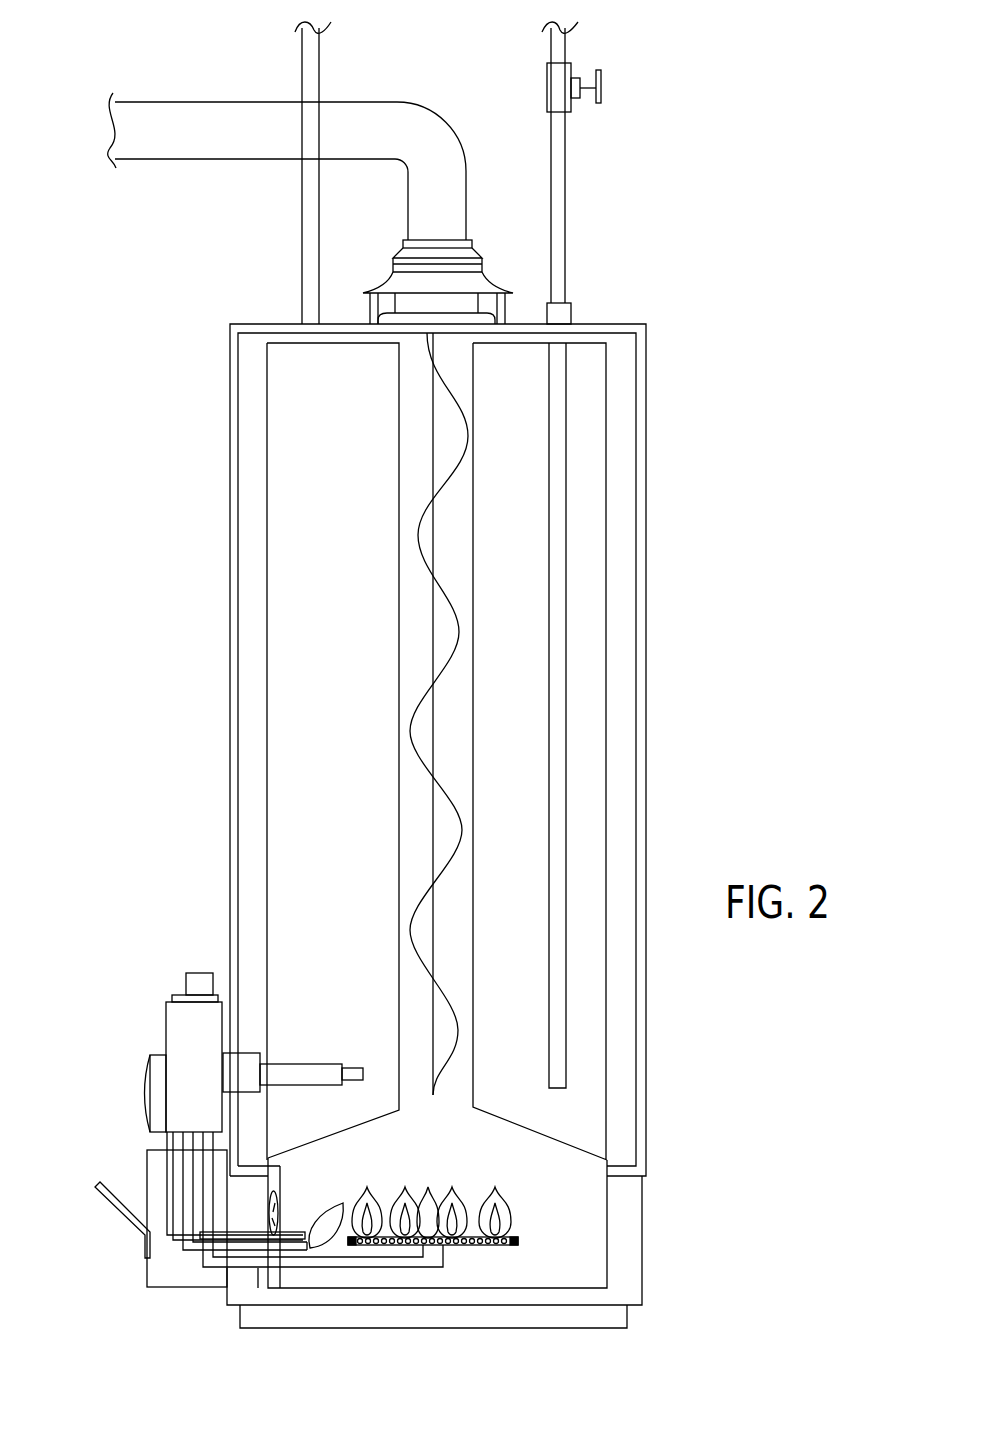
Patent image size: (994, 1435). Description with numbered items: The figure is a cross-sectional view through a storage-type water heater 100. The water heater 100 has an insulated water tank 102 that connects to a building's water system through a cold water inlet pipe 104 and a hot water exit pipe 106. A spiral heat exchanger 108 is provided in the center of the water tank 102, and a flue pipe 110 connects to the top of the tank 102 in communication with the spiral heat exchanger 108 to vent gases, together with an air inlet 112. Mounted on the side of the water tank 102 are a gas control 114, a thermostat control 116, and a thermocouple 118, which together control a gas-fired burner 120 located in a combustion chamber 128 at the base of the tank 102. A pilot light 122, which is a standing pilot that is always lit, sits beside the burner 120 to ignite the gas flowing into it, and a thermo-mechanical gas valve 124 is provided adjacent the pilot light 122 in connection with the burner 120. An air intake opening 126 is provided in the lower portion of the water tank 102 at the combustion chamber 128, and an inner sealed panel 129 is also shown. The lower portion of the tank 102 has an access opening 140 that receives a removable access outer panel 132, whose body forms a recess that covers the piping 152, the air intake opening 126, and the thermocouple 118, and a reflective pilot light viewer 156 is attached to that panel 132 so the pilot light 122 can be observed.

The water heater 100 is at (681, 71).
The water tank 102 is at (230, 775).
The cold water inlet pipe 104 is at (567, 190).
The hot water exit pipe 106 is at (303, 50).
The spiral heat exchanger 108 is at (428, 733).
The flue pipe 110 is at (150, 112).
The air inlet 112 is at (487, 301).
The gas control 114 is at (193, 977).
The thermostat control 116 is at (155, 1090).
The thermocouple 118 is at (245, 1241).
The gas-fired burner 120 is at (518, 1241).
The pilot light 122 is at (313, 1247).
The thermo-mechanical gas valve 124 is at (187, 1036).
The air intake opening 126 is at (263, 1193).
The combustion chamber 128 is at (557, 1189).
The inner sealed panel 129 is at (278, 1183).
The access outer panel 132 is at (163, 1273).
The access opening 140 is at (251, 1213).
The piping 152 is at (122, 1266).
The reflective pilot light viewer 156 is at (116, 1211).